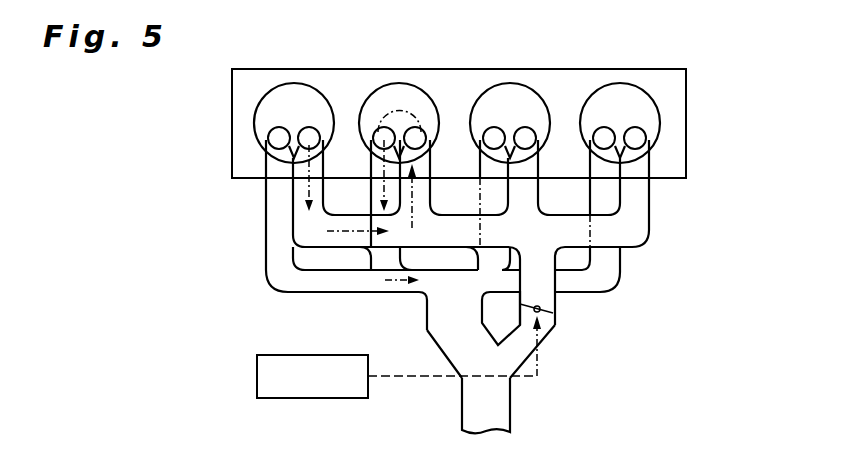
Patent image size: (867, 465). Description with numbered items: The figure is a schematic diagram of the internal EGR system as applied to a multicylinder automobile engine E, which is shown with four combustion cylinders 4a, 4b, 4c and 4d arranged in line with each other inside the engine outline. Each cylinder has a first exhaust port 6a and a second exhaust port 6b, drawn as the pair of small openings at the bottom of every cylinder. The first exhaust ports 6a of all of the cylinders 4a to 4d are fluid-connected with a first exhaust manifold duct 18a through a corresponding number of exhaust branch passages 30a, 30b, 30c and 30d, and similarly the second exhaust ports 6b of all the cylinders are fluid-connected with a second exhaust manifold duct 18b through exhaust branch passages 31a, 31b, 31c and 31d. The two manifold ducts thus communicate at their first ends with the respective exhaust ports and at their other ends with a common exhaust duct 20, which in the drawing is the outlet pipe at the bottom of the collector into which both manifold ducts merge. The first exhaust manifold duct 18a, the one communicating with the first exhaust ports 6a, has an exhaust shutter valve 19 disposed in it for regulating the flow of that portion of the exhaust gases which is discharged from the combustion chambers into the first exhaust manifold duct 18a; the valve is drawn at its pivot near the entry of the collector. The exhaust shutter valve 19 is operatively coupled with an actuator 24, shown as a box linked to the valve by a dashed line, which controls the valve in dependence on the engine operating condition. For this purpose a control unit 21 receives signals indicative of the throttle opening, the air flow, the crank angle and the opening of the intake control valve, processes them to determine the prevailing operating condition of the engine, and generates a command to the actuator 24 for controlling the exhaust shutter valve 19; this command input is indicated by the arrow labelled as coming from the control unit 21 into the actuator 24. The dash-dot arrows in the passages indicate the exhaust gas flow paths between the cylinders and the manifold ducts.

The engine E is at (692, 120).
The combustion cylinder 4a is at (284, 84).
The combustion cylinder 4b is at (400, 84).
The combustion cylinder 4c is at (502, 85).
The combustion cylinder 4d is at (618, 85).
The first exhaust port 6a is at (312, 128).
The second exhaust port 6b is at (268, 140).
The exhaust branch passage 30a is at (344, 204).
The exhaust branch passage 30b is at (434, 184).
The exhaust branch passage 30c is at (541, 184).
The exhaust branch passage 30d is at (652, 197).
The exhaust branch passage 31a is at (265, 247).
The exhaust branch passage 31b is at (363, 255).
The exhaust branch passage 31c is at (473, 250).
The exhaust branch passage 31d is at (618, 262).
The second exhaust manifold duct 18b is at (436, 342).
The first exhaust manifold duct 18a is at (555, 328).
The exhaust shutter valve 19 is at (541, 308).
The common exhaust duct 20 is at (512, 406).
The actuator 24 is at (325, 398).
The control unit 21 is at (248, 376).